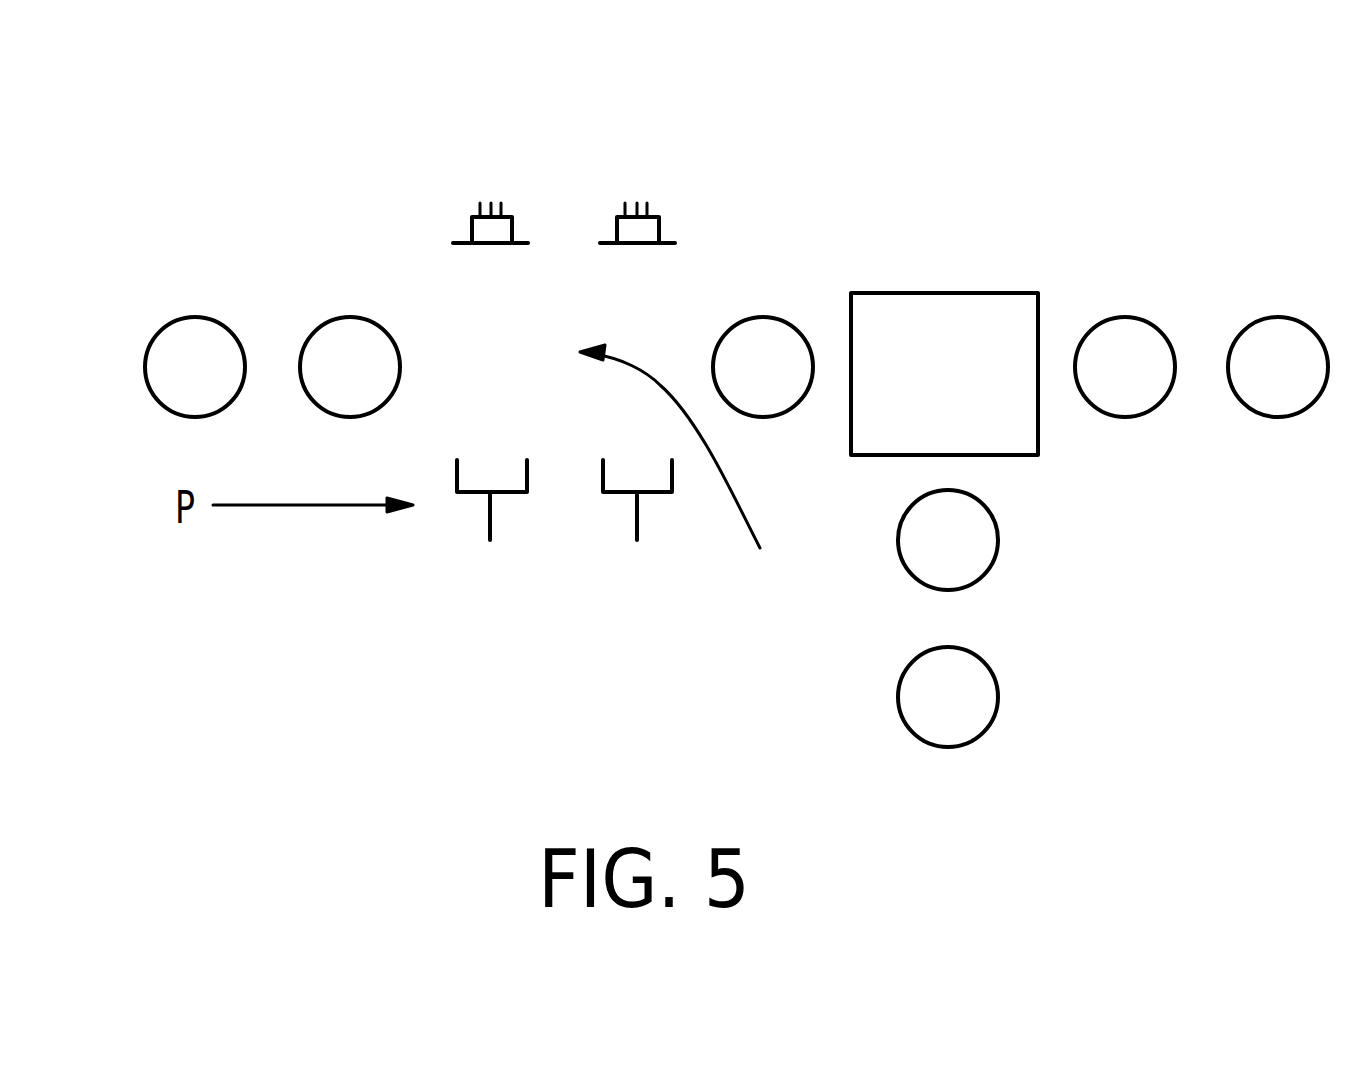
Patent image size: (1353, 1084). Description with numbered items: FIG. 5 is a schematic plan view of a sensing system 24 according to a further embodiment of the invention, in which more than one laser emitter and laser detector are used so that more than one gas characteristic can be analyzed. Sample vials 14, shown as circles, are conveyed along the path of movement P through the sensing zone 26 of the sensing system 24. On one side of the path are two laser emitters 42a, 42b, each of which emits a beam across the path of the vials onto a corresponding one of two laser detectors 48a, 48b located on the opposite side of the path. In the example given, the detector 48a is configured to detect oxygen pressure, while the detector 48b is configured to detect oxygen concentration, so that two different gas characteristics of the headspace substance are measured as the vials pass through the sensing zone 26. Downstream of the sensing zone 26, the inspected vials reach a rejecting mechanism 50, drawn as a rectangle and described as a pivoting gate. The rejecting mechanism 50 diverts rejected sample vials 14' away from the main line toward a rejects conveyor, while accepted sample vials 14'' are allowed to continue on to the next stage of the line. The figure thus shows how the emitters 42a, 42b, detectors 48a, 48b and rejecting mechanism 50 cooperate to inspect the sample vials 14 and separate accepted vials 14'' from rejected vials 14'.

The sample vial 14 is at (204, 320).
The rejected sample vial 14' is at (992, 541).
The accepted sample vial 14'' is at (1125, 313).
The sensing system 24 is at (574, 146).
The sensing zone 26 is at (685, 474).
The first laser emitter 42a is at (473, 228).
The second laser emitter 42b is at (677, 205).
The first laser detector 48a is at (487, 527).
The second laser detector 48b is at (632, 525).
The rejecting mechanism 50 is at (950, 307).